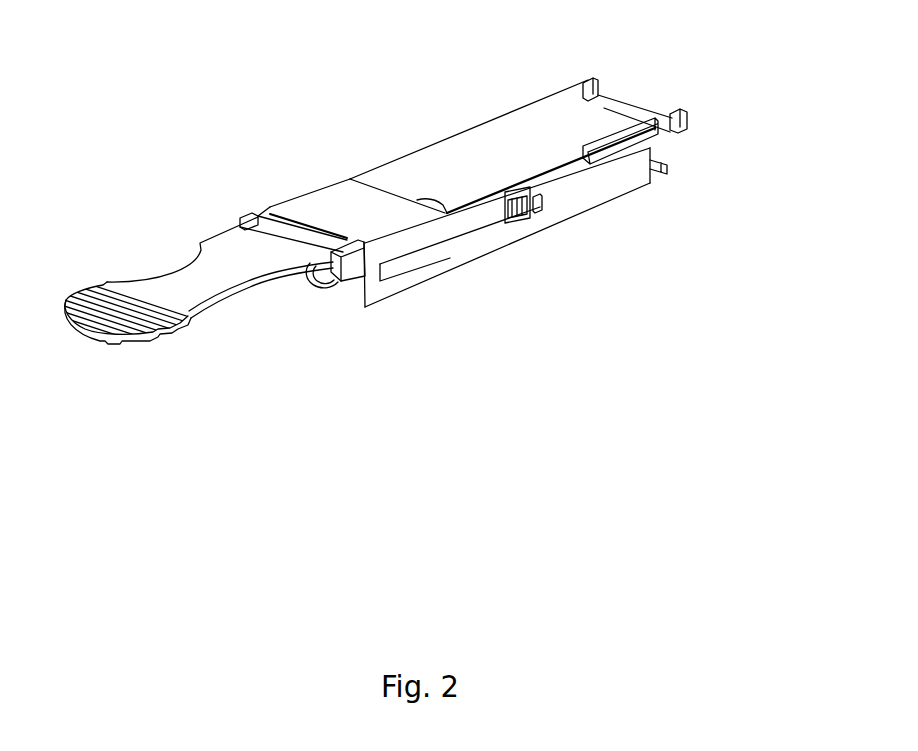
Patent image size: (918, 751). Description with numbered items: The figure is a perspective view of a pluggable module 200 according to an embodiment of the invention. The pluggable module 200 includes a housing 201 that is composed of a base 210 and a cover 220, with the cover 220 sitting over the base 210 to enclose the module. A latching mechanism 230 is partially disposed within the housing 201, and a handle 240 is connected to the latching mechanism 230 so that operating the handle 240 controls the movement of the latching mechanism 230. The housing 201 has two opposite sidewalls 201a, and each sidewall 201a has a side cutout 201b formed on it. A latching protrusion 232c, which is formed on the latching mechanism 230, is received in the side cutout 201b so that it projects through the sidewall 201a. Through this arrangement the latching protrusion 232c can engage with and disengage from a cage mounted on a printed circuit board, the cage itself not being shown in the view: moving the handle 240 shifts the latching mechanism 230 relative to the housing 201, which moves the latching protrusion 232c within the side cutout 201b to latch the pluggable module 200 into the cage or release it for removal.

The pluggable module 200 is at (60, 33).
The housing 201 is at (773, 138).
The sidewall 201a is at (476, 240).
The side cutout 201b is at (519, 225).
The base 210 is at (685, 122).
The cover 220 is at (656, 185).
The latching mechanism 230 is at (355, 256).
The latching protrusion 232c is at (537, 205).
The handle 240 is at (221, 286).